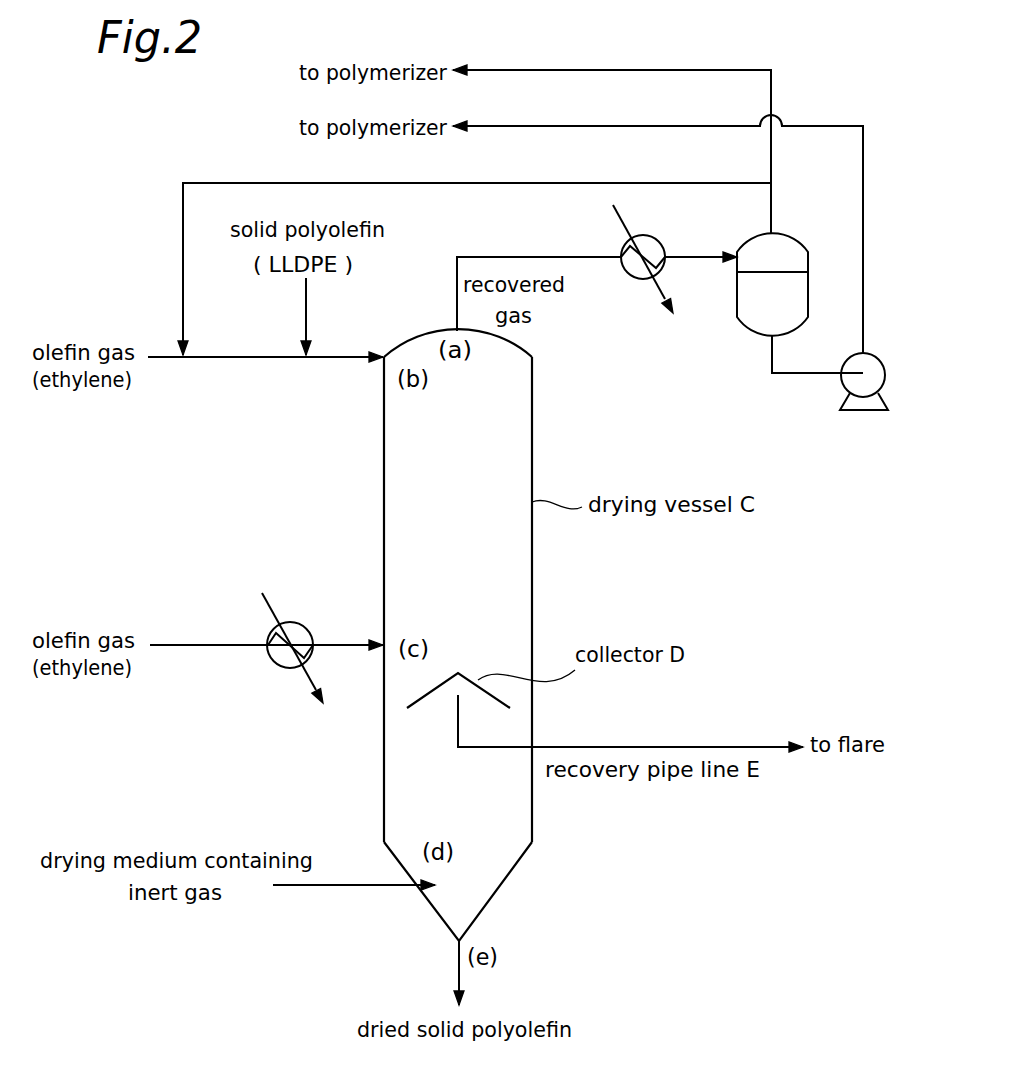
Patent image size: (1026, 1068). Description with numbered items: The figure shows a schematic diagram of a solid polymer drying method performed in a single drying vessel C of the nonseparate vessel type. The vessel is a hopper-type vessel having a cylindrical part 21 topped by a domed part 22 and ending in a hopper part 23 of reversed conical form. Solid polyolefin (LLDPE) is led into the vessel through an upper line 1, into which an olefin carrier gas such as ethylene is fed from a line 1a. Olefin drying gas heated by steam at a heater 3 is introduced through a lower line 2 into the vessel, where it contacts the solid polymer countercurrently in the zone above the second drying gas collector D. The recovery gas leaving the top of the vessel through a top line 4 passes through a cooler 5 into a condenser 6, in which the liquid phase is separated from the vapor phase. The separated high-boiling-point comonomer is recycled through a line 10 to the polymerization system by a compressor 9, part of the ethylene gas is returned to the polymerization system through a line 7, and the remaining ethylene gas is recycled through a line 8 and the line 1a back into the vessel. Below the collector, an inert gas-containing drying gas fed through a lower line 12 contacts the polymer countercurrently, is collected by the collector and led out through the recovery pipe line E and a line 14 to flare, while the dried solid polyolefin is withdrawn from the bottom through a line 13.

The upper line 1 is at (340, 358).
The line 1a is at (243, 358).
The lower line 2 is at (328, 645).
The heater 3 is at (268, 655).
The top line 4 is at (457, 297).
The cooler 5 is at (655, 233).
The condenser 6 is at (790, 235).
The line 7 is at (578, 70).
The line 8 is at (502, 183).
The compressor 9 is at (877, 350).
The line 10 is at (578, 126).
The lower line 12 is at (365, 887).
The line 13 is at (459, 962).
The line 14 is at (683, 747).
The cylindrical part 21 is at (532, 428).
The domed part 22 is at (522, 340).
The hopper part 23 is at (498, 888).